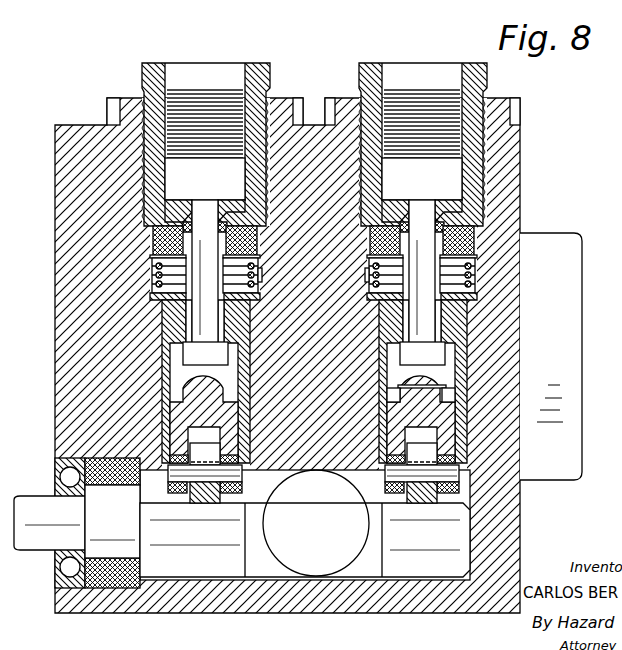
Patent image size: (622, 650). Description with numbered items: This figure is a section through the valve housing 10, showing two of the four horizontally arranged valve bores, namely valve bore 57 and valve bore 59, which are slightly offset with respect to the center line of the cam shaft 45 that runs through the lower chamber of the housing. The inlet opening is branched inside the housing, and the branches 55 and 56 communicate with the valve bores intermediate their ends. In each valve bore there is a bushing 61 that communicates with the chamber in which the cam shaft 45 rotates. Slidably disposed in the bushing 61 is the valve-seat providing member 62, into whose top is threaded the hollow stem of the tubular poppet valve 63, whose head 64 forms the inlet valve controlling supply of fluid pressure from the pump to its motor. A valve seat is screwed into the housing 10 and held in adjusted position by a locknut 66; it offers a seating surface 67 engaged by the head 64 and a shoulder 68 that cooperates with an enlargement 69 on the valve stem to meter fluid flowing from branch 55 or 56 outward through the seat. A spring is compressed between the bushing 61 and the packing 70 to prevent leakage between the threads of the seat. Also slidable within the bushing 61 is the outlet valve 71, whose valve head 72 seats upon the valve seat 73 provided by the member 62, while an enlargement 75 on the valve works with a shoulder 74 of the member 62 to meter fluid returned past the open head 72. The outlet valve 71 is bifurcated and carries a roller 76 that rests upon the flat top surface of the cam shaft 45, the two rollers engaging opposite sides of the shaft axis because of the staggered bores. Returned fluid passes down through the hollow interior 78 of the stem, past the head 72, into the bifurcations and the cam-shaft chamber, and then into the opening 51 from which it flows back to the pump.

The valve housing 10 is at (70, 146).
The cam shaft 45 is at (190, 548).
The opening 51 is at (290, 472).
The branch 55 is at (365, 275).
The branch 56 is at (270, 275).
The valve bore 57 is at (478, 274).
The valve bore 59 is at (152, 296).
The bushing 61 is at (166, 344).
The valve-seat providing member 62 is at (188, 320).
The tubular poppet valve 63 is at (153, 274).
The head 64 is at (164, 198).
The locknut 66 is at (146, 96).
The seating surface 67 is at (184, 224).
The shoulder 68 is at (152, 256).
The enlargement 69 is at (205, 210).
The packing 70 is at (158, 236).
The outlet valve 71 is at (164, 442).
The valve head 72 is at (222, 372).
The valve seat 73 is at (452, 404).
The shoulder 74 is at (447, 384).
The enlargement 75 is at (447, 368).
The roller 76 is at (200, 462).
The hollow interior 78 is at (423, 235).